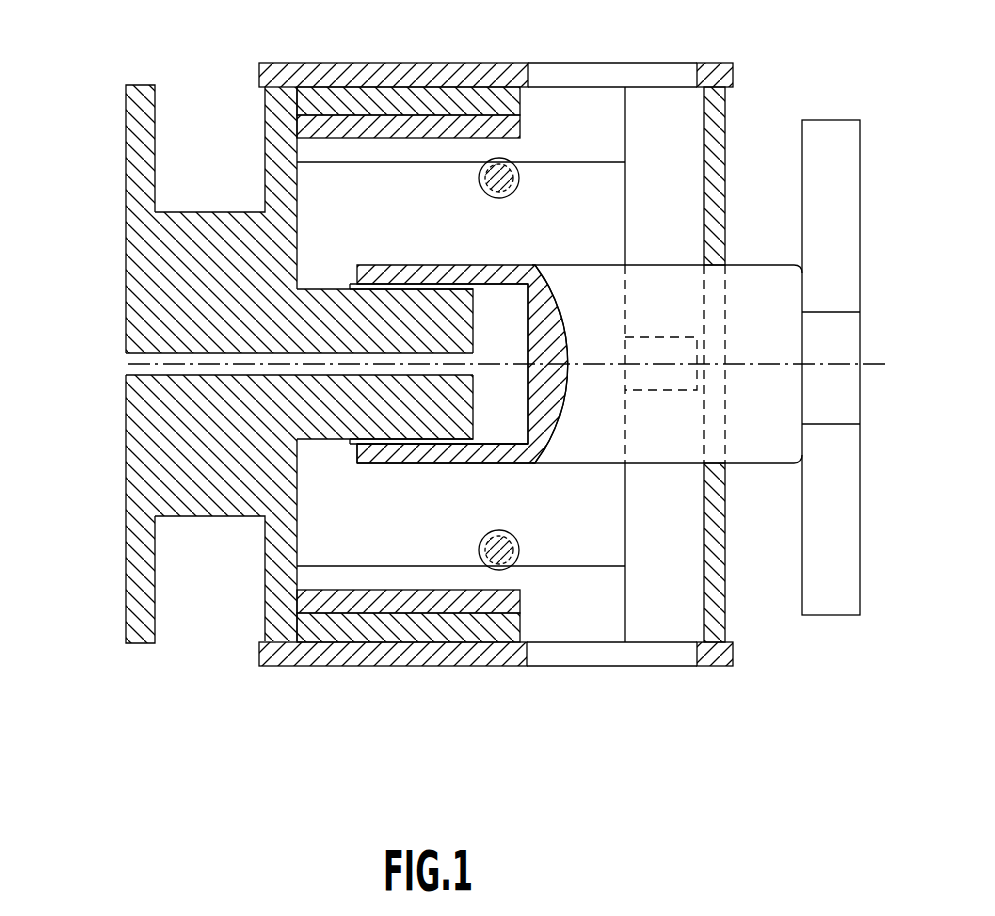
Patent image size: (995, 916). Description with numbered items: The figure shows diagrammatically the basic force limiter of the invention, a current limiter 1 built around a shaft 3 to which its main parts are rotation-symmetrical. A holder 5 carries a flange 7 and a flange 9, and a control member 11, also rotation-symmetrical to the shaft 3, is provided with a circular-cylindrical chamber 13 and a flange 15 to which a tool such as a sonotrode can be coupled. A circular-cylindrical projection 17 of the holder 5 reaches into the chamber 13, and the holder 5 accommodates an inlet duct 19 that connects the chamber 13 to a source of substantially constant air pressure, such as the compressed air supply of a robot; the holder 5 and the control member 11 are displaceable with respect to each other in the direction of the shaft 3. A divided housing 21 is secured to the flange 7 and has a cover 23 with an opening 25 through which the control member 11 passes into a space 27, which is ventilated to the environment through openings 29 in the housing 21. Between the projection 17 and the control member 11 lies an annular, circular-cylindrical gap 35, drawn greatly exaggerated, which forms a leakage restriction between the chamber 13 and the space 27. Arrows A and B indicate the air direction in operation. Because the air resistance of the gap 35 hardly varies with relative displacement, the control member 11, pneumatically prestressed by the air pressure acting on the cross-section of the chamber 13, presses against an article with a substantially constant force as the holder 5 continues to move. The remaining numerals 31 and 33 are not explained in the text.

The current limiter 1 is at (494, 60).
The shaft 3 is at (881, 366).
The holder 5 is at (207, 432).
The flange 7 is at (134, 149).
The flange 9 is at (273, 587).
The control member 11 is at (657, 443).
The chamber 13 is at (503, 410).
The flange 15 is at (836, 190).
The projection 17 is at (448, 335).
The inlet duct 19 is at (180, 355).
The housing 21 is at (393, 72).
The cover 23 is at (716, 618).
The opening 25 is at (718, 260).
The space 27 is at (572, 550).
The openings 29 is at (607, 73).
The seal ring 31 is at (412, 286).
The sleeve 33 is at (448, 279).
The gap 35 is at (418, 446).